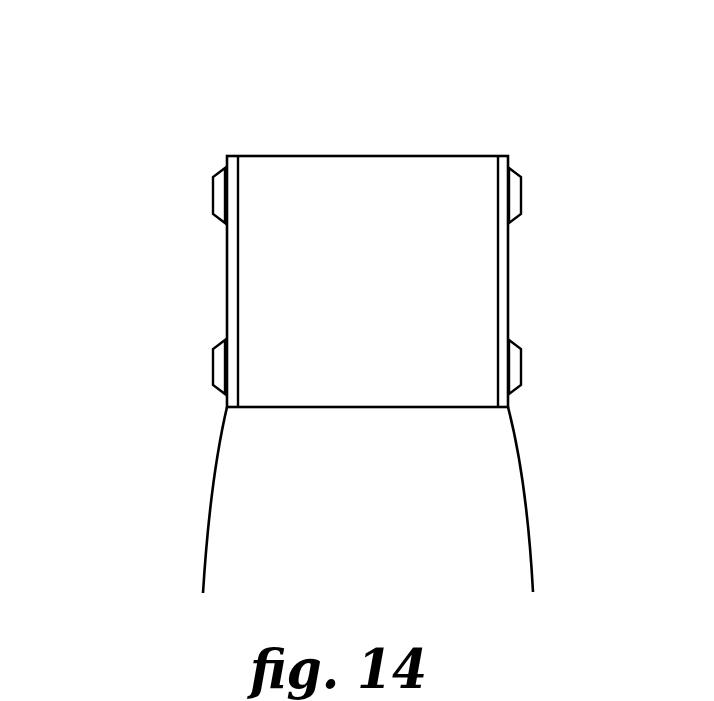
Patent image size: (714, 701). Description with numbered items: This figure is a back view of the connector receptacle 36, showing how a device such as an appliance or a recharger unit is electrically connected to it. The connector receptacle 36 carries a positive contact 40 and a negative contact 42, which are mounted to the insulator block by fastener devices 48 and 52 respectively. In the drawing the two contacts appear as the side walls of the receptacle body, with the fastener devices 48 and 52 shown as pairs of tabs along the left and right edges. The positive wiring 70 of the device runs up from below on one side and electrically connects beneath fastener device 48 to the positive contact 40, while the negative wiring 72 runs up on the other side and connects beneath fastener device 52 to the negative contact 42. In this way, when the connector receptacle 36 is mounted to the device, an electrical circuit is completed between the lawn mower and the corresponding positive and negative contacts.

The connector receptacle 36 is at (385, 193).
The positive contact 40 is at (231, 156).
The negative contact 42 is at (505, 156).
The fastener device 48 is at (215, 195).
The fastener device 52 is at (521, 192).
The positive wiring 70 is at (208, 537).
The negative wiring 72 is at (527, 513).